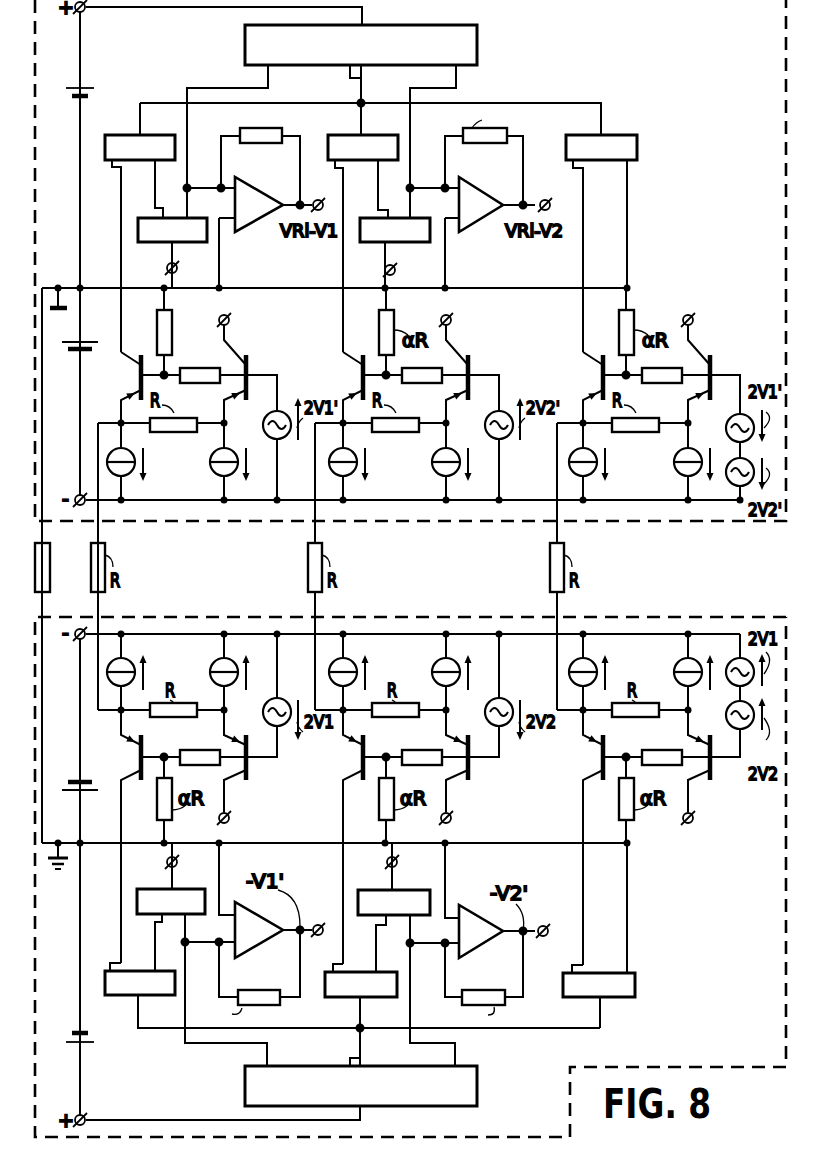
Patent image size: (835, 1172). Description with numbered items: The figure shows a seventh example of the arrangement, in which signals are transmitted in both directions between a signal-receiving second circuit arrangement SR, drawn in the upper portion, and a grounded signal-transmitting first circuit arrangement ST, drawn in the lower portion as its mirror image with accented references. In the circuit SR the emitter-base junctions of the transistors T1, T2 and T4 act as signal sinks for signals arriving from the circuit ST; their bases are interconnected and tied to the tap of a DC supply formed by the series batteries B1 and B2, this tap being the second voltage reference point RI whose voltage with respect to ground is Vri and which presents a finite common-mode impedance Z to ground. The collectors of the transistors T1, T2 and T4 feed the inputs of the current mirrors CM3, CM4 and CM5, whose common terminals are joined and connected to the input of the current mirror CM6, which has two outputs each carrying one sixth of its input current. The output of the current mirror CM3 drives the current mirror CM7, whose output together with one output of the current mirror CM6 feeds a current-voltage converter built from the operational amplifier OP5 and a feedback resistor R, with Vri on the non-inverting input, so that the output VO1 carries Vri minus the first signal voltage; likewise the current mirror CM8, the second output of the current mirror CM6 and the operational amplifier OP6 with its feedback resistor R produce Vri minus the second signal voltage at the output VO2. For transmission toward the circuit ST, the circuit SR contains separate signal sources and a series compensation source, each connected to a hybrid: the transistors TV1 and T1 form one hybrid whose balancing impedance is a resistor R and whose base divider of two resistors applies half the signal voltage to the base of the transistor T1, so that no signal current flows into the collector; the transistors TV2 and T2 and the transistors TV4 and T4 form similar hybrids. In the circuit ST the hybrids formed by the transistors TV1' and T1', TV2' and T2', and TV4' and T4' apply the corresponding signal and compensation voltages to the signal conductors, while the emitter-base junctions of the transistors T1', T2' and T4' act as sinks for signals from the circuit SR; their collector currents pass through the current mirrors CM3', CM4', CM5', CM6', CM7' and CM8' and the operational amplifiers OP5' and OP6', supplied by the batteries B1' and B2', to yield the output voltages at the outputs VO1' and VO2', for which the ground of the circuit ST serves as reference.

The signal-receiving second circuit arrangement SR is at (689, 526).
The grounded signal-transmitting first circuit arrangement ST is at (687, 612).
The battery B1 is at (89, 91).
The battery B2 is at (84, 338).
The battery B1' is at (87, 1042).
The battery B2' is at (71, 778).
The current mirror CM3 is at (140, 231).
The current mirror CM4 is at (363, 231).
The current mirror CM5 is at (607, 231).
The current mirror CM6 is at (332, 109).
The current mirror CM7 is at (167, 253).
The current mirror CM8 is at (390, 253).
The current mirror CM3' is at (346, 995).
The current mirror CM4' is at (368, 1015).
The current mirror CM5' is at (612, 935).
The current mirror CM6' is at (387, 1086).
The current mirror CM7' is at (196, 954).
The current mirror CM8' is at (401, 954).
The operational amplifier OP5 is at (248, 221).
The operational amplifier OP6 is at (471, 196).
The operational amplifier OP5' is at (247, 932).
The operational amplifier OP6' is at (471, 933).
The resistor R is at (246, 128).
The impedance Z is at (50, 555).
The second voltage reference point RI is at (58, 287).
The reference voltage Vri is at (80, 287).
The output VO1 is at (319, 193).
The output VO2 is at (546, 193).
The output VO1' is at (325, 903).
The output VO2' is at (556, 910).
The transistor T1 is at (142, 366).
The transistor T2 is at (364, 366).
The transistor T4 is at (586, 376).
The transistor TV1 is at (254, 404).
The transistor TV2 is at (476, 404).
The transistor TV4 is at (717, 404).
The transistor T1' is at (129, 836).
The transistor T2' is at (351, 837).
The transistor T4' is at (586, 837).
The transistor TV1' is at (236, 730).
The transistor TV2' is at (458, 730).
The transistor TV4' is at (698, 730).